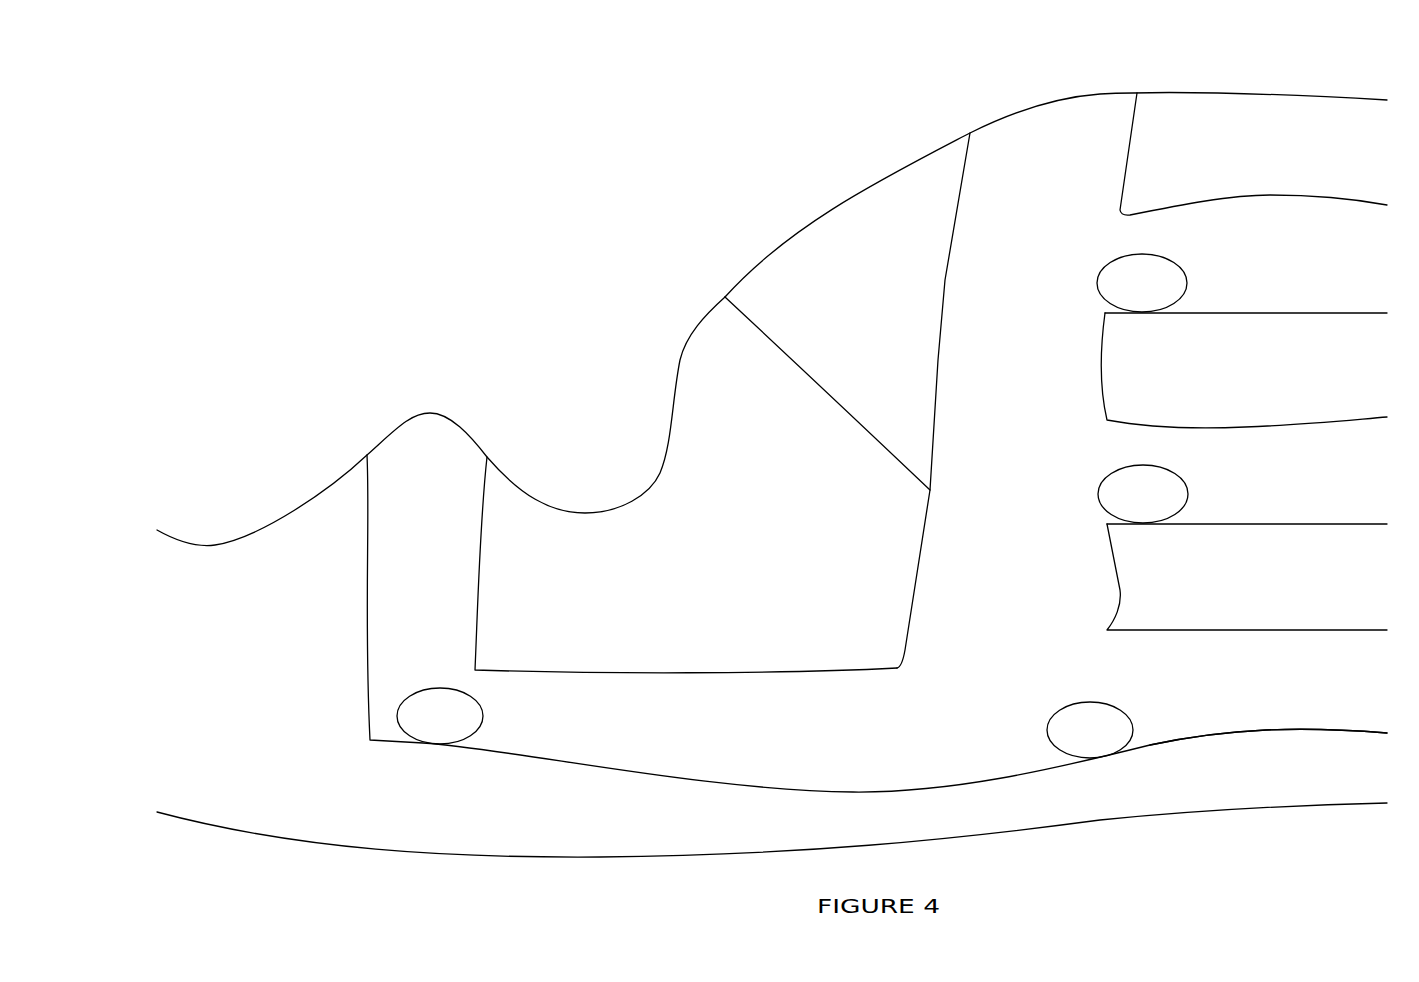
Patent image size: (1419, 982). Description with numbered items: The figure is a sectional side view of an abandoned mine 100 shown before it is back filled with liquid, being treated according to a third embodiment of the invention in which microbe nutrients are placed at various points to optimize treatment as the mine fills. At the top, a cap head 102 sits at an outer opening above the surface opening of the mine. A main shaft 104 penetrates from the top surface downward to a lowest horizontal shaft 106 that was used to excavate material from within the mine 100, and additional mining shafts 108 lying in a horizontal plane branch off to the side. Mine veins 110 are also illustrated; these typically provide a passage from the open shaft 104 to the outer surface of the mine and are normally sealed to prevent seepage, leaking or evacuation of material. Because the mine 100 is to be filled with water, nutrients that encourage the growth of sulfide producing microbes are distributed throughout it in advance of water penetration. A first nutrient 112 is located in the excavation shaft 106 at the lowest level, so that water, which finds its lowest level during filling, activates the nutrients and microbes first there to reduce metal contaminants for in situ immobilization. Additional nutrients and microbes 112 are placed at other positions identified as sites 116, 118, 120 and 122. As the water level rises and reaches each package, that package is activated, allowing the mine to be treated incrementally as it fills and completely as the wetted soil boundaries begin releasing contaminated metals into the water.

The mine 100 is at (752, 108).
The cap head 102 is at (430, 413).
The main shaft 104 is at (1069, 97).
The lowest horizontal shaft 106 is at (583, 670).
The shafts 108 is at (1277, 195).
The mine veins 110 is at (793, 360).
The nutrients 112 is at (1122, 294).
The site 116 is at (442, 743).
The site 118 is at (1102, 700).
The site 120 is at (1163, 523).
The site 122 is at (1142, 313).